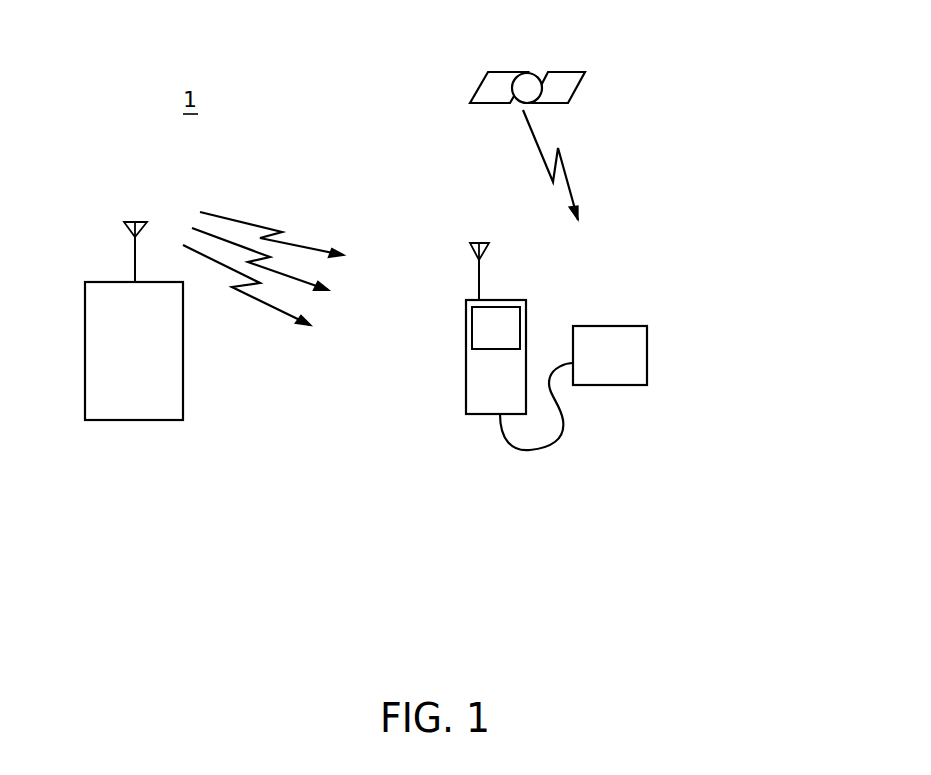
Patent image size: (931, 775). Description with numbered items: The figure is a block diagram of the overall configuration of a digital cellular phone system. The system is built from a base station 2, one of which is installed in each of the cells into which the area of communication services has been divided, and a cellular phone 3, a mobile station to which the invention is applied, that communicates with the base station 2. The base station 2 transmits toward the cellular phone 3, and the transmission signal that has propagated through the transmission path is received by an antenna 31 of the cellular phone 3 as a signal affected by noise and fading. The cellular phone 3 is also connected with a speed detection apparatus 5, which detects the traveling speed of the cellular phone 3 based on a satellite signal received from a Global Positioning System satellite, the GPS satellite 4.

The base station 2 is at (128, 420).
The cellular phone 3 is at (539, 350).
The antenna 31 is at (485, 243).
The GPS satellite 4 is at (536, 72).
The speed detection apparatus 5 is at (600, 326).